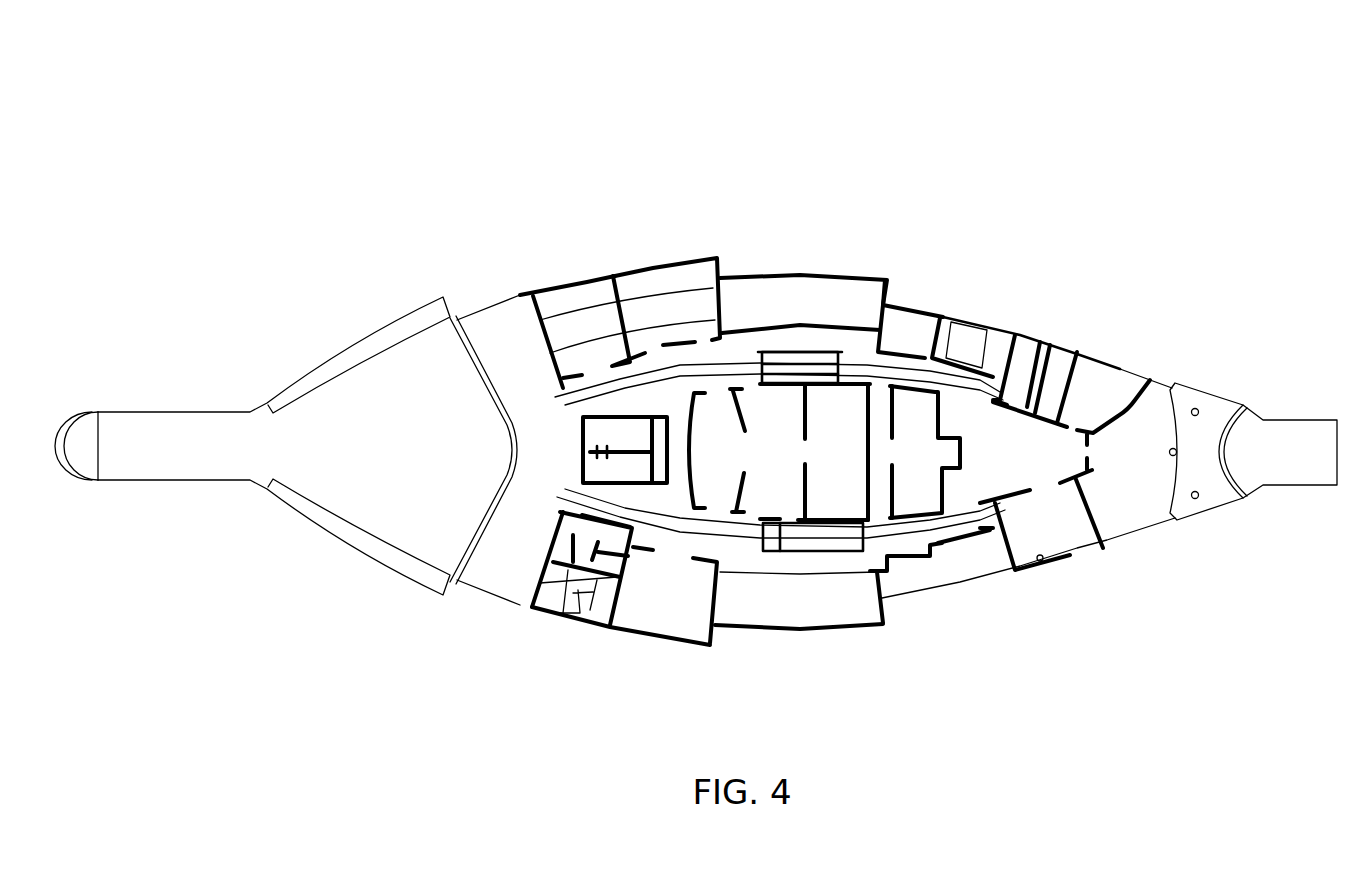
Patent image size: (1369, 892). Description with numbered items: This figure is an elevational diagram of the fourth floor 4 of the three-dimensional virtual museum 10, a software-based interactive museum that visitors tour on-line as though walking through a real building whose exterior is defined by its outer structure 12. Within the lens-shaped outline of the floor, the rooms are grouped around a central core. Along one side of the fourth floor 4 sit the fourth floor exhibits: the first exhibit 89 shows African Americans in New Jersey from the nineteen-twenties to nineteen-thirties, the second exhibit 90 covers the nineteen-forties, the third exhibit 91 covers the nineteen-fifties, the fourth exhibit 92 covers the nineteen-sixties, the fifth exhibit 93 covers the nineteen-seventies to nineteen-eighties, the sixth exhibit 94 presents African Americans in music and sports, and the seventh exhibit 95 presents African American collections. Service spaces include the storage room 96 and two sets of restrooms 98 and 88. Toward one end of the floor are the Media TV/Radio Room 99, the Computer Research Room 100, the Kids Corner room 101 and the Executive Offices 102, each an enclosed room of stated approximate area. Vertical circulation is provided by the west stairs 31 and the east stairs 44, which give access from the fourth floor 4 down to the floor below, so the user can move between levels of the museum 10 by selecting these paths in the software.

The 3D virtual museum 10 is at (285, 97).
The outer structure 12 is at (305, 333).
The fourth floor 4 is at (305, 585).
The Fourth Floor Exhibit 2 90 is at (573, 287).
The Fourth Floor Exhibit 3 91 is at (660, 270).
The Fourth Floor Exhibit 5 93 is at (762, 405).
The Fourth Floor Exhibit 4 92 is at (713, 497).
The Fourth Floor Exhibit 6 94 is at (826, 497).
The Fourth Floor Exhibit 7 95 is at (919, 491).
The storage room 96 is at (908, 317).
The west stairs 31 is at (978, 320).
The restrooms 98 is at (1038, 342).
The Media TV/Radio Room 99 is at (1104, 370).
The Computer Research Room 100 is at (1157, 393).
The east stairs 44 is at (579, 613).
The Fourth Floor Exhibit 1 89 is at (660, 645).
The restrooms 88 is at (650, 483).
The Executive Offices 102 is at (932, 596).
The Kids Corner room 101 is at (1070, 555).